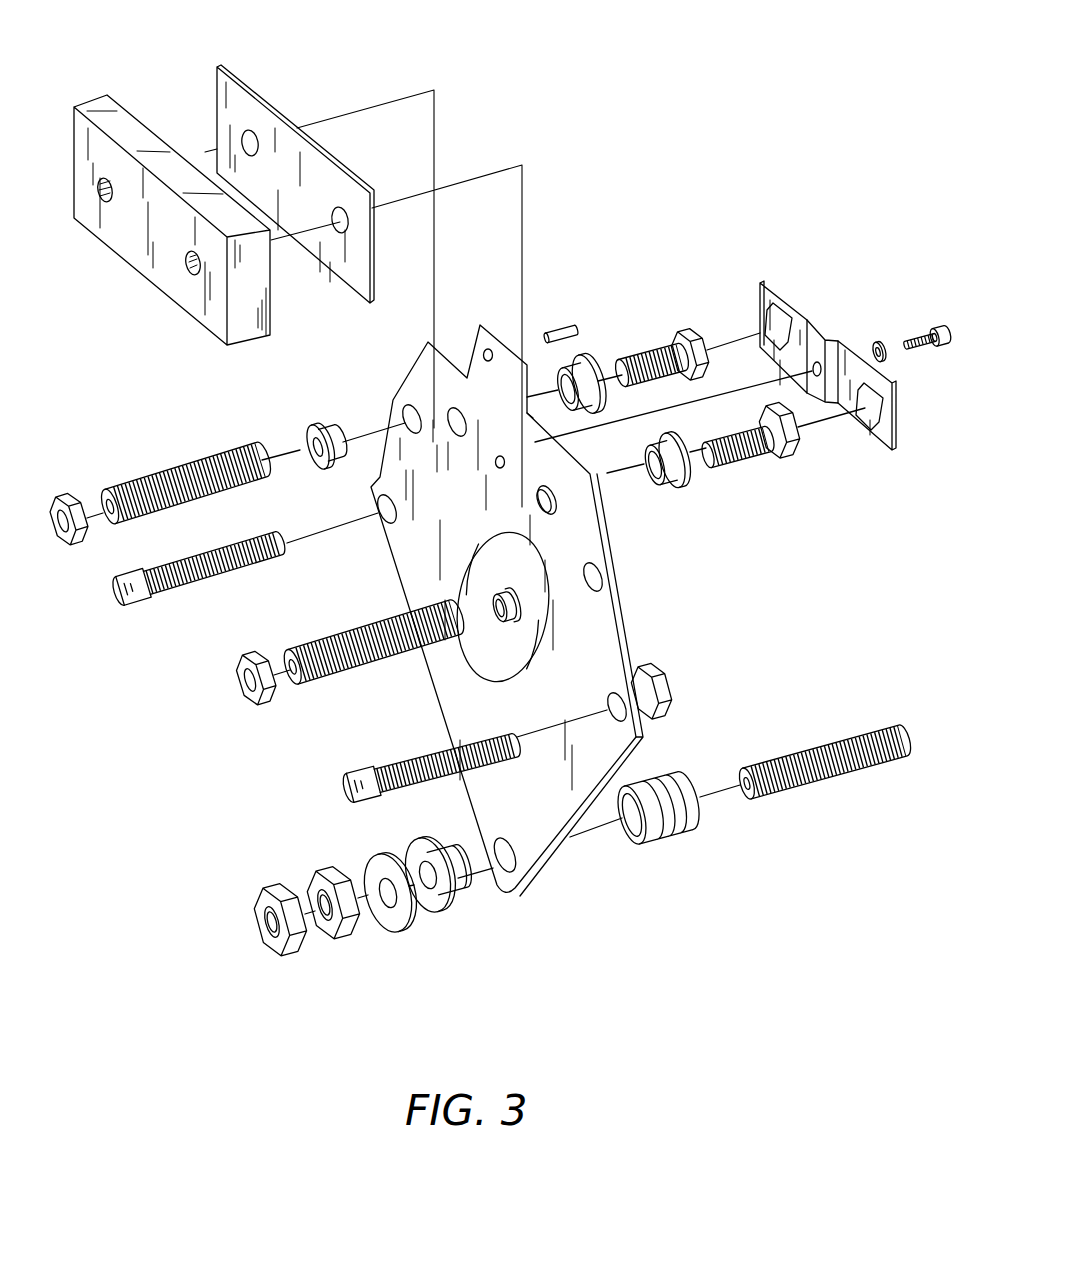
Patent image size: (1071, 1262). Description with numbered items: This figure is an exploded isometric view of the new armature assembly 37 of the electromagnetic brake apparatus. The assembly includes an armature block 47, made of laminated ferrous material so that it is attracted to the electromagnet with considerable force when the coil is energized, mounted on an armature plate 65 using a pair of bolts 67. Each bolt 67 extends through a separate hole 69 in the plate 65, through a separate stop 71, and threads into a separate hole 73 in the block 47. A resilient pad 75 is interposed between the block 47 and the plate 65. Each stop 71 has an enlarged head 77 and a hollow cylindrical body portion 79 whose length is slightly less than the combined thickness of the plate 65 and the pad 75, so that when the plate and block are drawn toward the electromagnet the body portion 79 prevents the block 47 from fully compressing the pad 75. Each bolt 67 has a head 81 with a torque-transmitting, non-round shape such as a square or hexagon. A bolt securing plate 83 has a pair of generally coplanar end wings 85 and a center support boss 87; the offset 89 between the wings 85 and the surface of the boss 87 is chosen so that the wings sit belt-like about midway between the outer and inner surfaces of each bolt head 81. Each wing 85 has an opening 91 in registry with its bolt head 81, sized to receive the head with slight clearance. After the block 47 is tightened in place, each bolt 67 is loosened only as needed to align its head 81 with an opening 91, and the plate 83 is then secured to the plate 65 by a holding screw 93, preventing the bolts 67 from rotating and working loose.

The armature assembly 37 is at (560, 233).
The armature block 47 is at (115, 112).
The armature plate 65 is at (640, 628).
The bolt 67 is at (687, 330).
The hole 69 is at (550, 506).
The stop 71 is at (583, 353).
The hole 73 is at (190, 272).
The resilient pad 75 is at (247, 85).
The enlarged head 77 is at (690, 472).
The hollow cylindrical body portion 79 is at (645, 456).
The head 81 is at (707, 323).
The bolt securing plate 83 is at (812, 348).
The end wing 85 is at (762, 280).
The center support boss 87 is at (812, 332).
The offset 89 is at (838, 343).
The opening 91 is at (780, 315).
The holding screw 93 is at (925, 352).